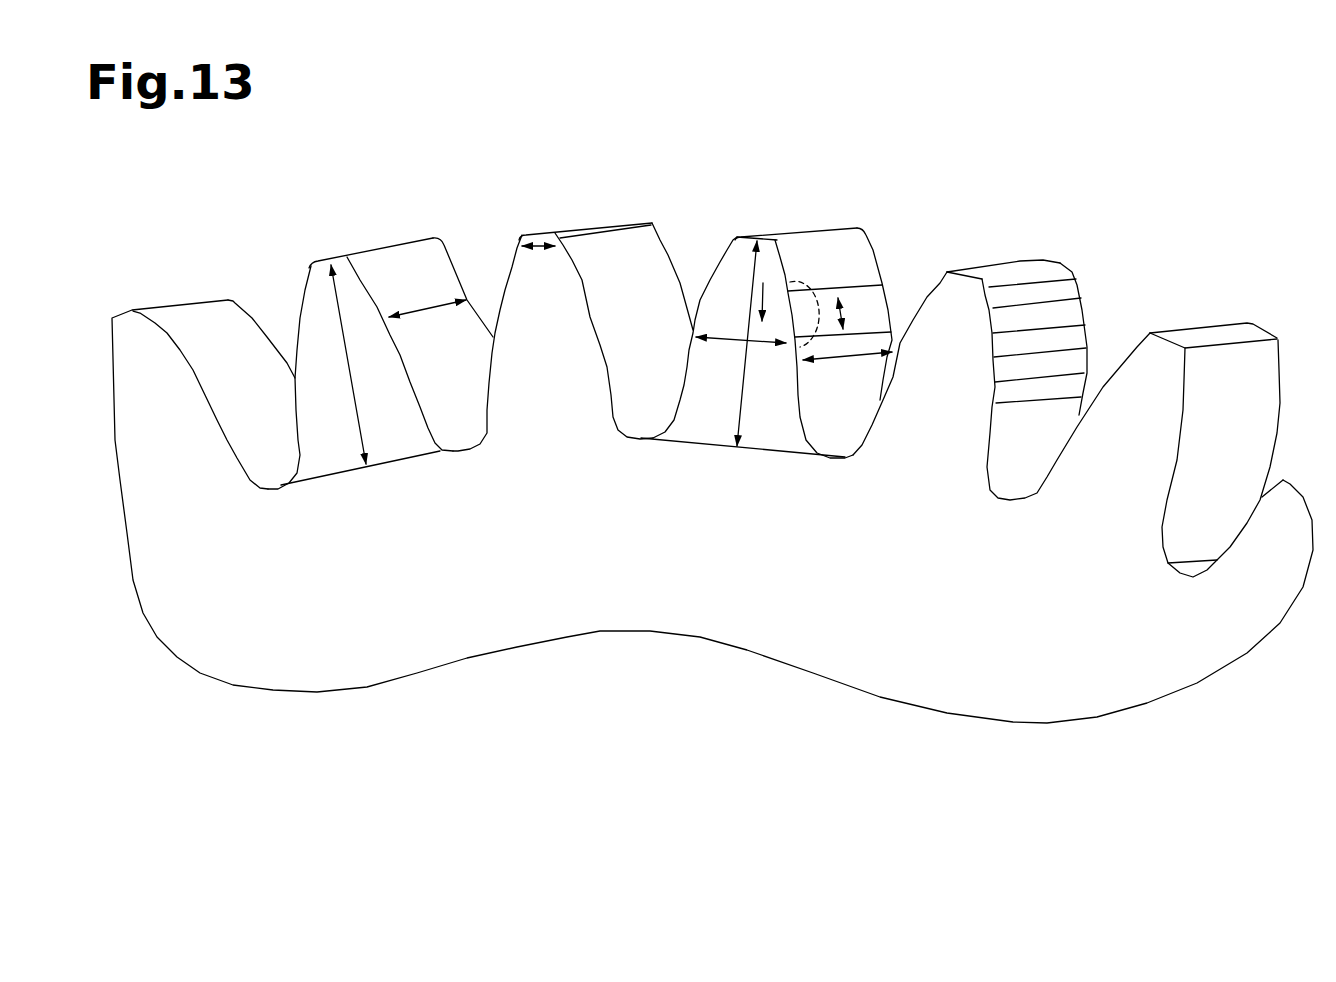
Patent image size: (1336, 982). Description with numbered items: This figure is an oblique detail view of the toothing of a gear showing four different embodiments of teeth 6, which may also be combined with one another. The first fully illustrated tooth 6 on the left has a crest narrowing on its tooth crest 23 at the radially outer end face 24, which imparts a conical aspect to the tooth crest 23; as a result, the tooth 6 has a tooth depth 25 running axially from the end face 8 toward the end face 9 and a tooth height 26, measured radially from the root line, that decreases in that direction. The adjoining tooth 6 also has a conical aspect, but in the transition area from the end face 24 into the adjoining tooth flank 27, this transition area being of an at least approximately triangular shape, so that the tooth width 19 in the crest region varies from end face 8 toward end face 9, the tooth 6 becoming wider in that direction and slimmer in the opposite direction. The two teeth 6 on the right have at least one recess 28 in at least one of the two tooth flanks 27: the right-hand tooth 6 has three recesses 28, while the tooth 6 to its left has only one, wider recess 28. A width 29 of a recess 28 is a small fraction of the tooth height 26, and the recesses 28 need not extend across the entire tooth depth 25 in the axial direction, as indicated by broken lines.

The tooth 6 is at (607, 430).
The end face 8 is at (313, 322).
The end face 9 is at (455, 268).
The tooth width 19 is at (563, 310).
The tooth crest 23 is at (293, 255).
The radially outer end face 24 is at (684, 188).
The tooth depth 25 is at (580, 367).
The tooth height 26 is at (658, 404).
The tooth flank 27 is at (825, 372).
The recess 28 is at (993, 286).
The width 29 is at (849, 251).